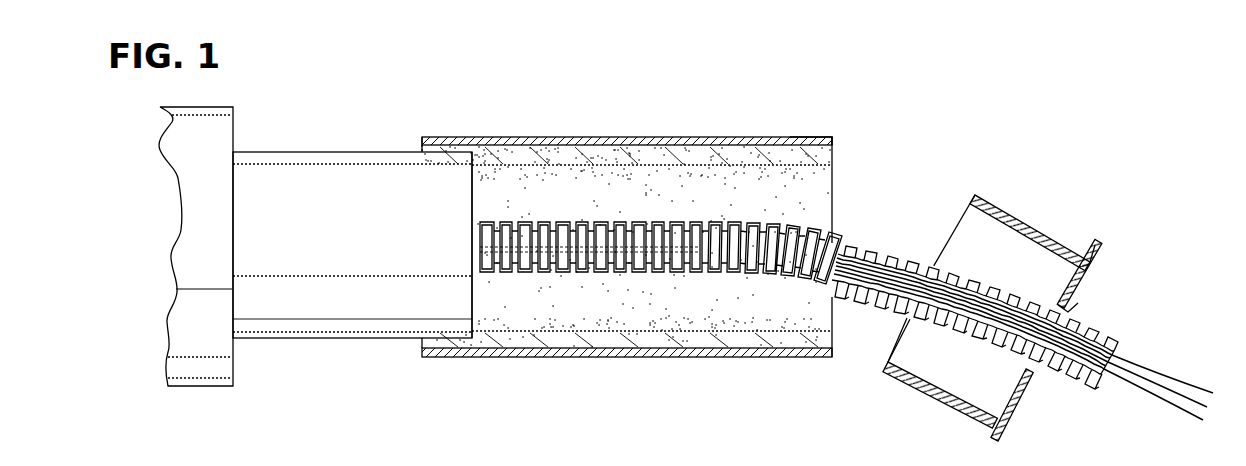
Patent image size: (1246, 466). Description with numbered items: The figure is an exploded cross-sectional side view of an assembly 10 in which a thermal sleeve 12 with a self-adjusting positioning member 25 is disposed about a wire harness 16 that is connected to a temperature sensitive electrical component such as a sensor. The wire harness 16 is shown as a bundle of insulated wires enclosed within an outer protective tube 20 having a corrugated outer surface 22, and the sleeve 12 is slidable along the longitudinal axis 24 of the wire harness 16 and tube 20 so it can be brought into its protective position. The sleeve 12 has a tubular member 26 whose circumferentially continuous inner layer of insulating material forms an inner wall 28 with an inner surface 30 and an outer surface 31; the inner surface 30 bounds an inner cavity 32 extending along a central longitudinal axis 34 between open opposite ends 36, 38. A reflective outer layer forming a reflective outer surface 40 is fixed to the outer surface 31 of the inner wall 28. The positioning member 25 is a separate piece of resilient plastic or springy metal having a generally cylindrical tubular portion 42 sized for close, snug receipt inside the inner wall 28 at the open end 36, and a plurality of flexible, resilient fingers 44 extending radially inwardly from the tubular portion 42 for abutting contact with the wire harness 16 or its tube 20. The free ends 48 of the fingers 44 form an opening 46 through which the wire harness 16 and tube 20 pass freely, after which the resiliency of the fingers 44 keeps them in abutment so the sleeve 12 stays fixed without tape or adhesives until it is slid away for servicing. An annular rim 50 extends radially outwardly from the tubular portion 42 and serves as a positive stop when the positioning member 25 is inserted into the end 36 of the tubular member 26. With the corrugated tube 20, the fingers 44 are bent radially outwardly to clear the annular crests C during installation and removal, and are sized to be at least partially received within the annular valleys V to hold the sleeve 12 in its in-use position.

The assembly 10 is at (1138, 140).
The sleeve 12 is at (1104, 170).
The wire harness 16 is at (1170, 383).
The tube 20 is at (856, 228).
The corrugated outer surface 22 is at (740, 222).
The longitudinal axis 24 is at (578, 230).
The positioning member 25 is at (1122, 266).
The tubular member 26 is at (607, 138).
The inner wall 28 is at (660, 150).
The inner surface 30 is at (637, 318).
The outer surface 31 is at (665, 350).
The inner cavity 32 is at (724, 310).
The central longitudinal axis 34 is at (627, 227).
The open end 36 is at (836, 148).
The open end 38 is at (424, 147).
The reflective outer surface 40 is at (808, 137).
The tubular portion 42 is at (978, 430).
The fingers 44 is at (1078, 297).
The opening 46 is at (1068, 312).
The free ends 48 is at (1052, 302).
The annular rim 50 is at (1093, 252).
The annular crests C is at (878, 265).
The annular valleys V is at (918, 272).